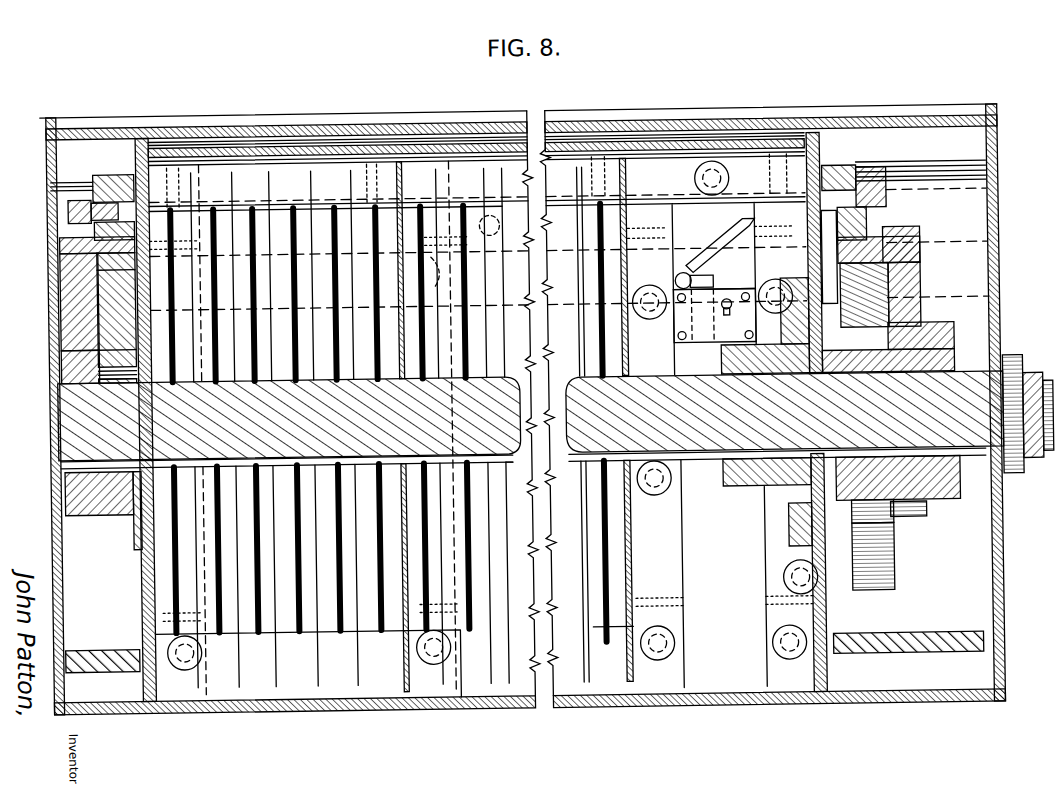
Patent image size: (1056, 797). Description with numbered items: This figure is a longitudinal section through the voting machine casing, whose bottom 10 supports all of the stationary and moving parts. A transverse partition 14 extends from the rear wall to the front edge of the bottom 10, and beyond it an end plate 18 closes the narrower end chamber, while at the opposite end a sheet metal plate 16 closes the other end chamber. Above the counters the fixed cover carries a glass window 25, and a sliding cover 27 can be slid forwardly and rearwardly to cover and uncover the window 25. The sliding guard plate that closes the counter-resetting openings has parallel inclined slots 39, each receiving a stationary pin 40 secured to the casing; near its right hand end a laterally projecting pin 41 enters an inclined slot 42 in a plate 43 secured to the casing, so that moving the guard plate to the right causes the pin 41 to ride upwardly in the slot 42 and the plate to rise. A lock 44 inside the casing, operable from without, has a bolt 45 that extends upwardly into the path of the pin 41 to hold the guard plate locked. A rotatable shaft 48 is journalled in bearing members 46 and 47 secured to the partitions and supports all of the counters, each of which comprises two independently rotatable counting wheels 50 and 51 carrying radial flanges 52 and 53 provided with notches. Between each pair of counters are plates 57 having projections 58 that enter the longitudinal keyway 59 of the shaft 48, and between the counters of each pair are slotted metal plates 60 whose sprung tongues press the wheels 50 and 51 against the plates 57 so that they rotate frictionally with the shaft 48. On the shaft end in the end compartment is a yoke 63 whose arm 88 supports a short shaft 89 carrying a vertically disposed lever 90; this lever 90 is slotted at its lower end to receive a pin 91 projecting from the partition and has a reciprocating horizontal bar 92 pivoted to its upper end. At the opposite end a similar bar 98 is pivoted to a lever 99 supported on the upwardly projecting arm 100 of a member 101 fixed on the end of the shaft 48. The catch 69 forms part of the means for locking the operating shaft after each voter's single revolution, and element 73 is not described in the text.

The bottom 10 is at (581, 700).
The transverse partition 14 is at (147, 570).
The sheet metal end plate 16 is at (999, 548).
The end plate 18 is at (62, 306).
The glass window 25 is at (318, 136).
The sliding cover 27 is at (420, 124).
The inclined slot 39 is at (476, 254).
The stationary pin 40 is at (502, 203).
The laterally projecting pin 41 is at (686, 275).
The inclined slot 42 is at (736, 241).
The plate 43 is at (688, 223).
The lock 44 is at (728, 291).
The bolt 45 is at (709, 291).
The bearing member 46 is at (738, 488).
The bearing member 47 is at (130, 526).
The rotatable shaft 48 is at (78, 419).
The counting wheel 50 is at (318, 222).
The counting wheel 51 is at (225, 228).
The flange 52 is at (254, 640).
The flange 53 is at (304, 641).
The plate 57 is at (272, 212).
The projection 58 is at (85, 512).
The longitudinal keyway 59 is at (705, 455).
The metal plate 60 is at (293, 265).
The yoke 63 is at (955, 338).
The catch 69 is at (885, 539).
The bolt 73 is at (823, 602).
The arm 88 is at (919, 280).
The short shaft 89 is at (915, 255).
The lever 90 is at (866, 227).
The pin 91 is at (787, 338).
The reciprocating bar 92 is at (830, 167).
The bar 98 is at (121, 175).
The lever 99 is at (60, 318).
The upwardly projecting arm 100 is at (60, 274).
The member 101 is at (62, 372).